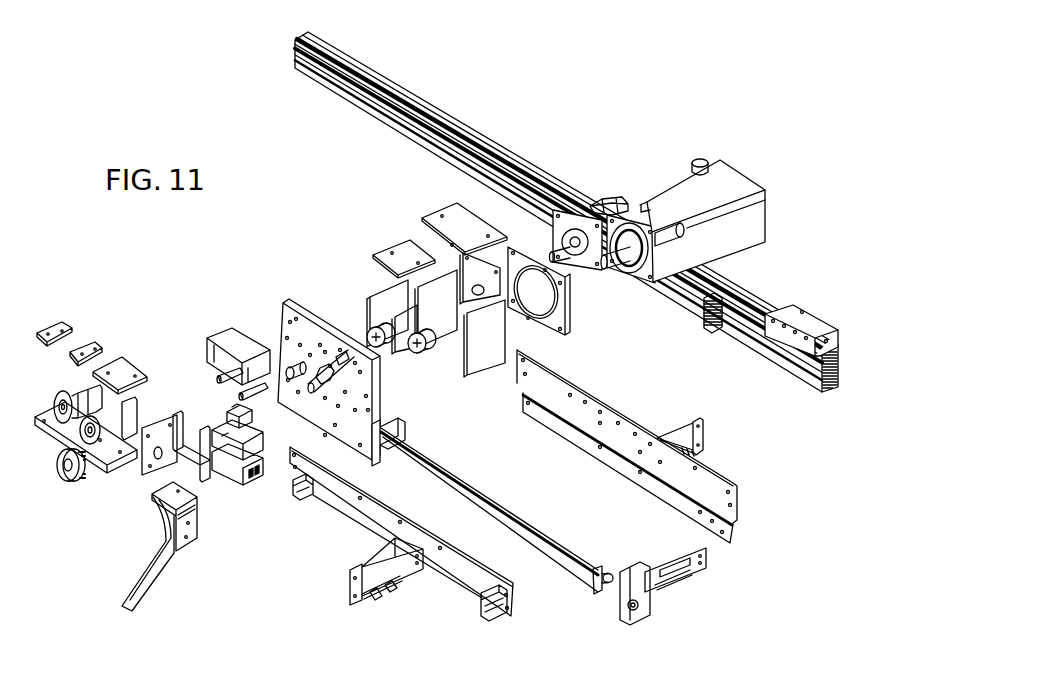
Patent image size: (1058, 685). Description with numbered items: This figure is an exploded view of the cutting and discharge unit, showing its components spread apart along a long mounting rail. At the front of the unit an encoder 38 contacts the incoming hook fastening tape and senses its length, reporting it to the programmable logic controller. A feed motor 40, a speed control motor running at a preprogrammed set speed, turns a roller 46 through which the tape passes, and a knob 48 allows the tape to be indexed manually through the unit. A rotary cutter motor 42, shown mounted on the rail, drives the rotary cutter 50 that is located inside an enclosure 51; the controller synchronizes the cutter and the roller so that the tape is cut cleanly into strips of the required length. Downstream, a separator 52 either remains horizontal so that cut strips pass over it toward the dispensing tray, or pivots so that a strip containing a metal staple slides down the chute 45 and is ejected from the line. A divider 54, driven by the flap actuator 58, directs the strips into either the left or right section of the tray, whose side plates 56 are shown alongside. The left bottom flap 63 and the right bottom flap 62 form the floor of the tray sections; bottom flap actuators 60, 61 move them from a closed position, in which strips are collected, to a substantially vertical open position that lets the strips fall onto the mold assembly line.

The encoder 38 is at (82, 391).
The feed motor 40 is at (597, 202).
The rotary cutter motor 42 is at (728, 182).
The chute 45 is at (152, 580).
The roller 46 is at (102, 427).
The knob 48 is at (68, 474).
The rotary cutter 50 is at (235, 410).
The enclosure 51 is at (233, 333).
The separator 52 is at (192, 528).
The divider 54 is at (432, 465).
The side plate 56 is at (348, 509).
The flap actuator 58 is at (693, 573).
The bottom flap actuator 60 is at (377, 596).
The bottom flap actuator 61 is at (697, 455).
The right bottom flap 62 is at (513, 620).
The left bottom flap 63 is at (730, 533).